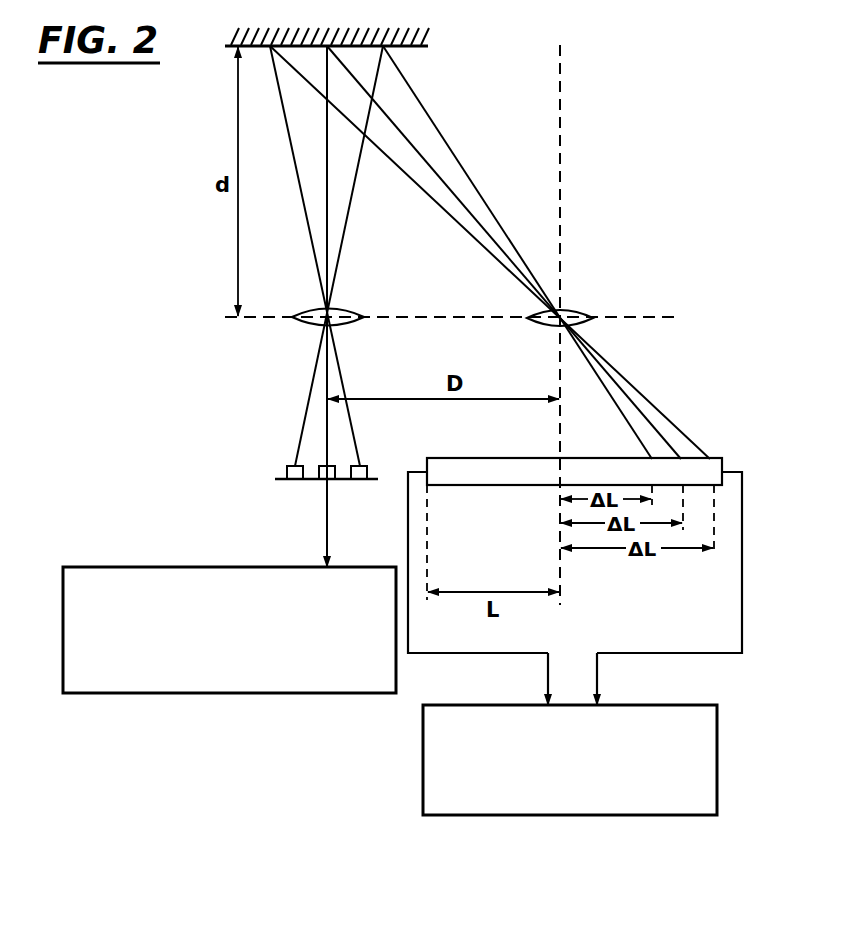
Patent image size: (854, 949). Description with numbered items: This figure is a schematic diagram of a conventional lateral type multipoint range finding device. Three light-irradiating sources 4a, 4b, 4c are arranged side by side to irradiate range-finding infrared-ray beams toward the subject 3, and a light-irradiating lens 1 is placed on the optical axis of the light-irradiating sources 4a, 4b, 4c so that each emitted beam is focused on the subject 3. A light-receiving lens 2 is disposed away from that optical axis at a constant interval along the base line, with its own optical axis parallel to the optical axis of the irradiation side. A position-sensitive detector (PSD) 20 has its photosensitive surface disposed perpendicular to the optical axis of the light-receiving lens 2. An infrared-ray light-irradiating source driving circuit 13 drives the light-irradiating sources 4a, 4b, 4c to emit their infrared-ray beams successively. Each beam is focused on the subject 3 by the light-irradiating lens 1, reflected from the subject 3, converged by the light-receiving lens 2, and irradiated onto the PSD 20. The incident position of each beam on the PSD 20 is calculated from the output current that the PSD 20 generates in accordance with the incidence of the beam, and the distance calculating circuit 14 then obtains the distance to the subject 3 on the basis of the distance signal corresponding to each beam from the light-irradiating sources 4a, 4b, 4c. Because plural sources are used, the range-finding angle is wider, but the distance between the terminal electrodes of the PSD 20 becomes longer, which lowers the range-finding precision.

The subject 3 is at (428, 44).
The light-irradiating lens 1 is at (343, 313).
The light-receiving lens 2 is at (574, 313).
The light-irradiating source 4a is at (287, 466).
The light-irradiating source 4b is at (335, 480).
The light-irradiating source 4c is at (367, 466).
The position-sensitive detector (PSD) 20 is at (722, 460).
The infrared-ray light-irradiating source driving circuit 13 is at (267, 567).
The distance calculating circuit 14 is at (717, 727).